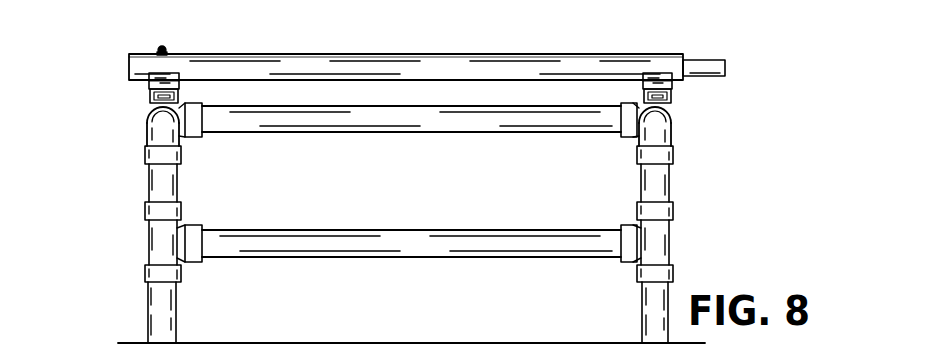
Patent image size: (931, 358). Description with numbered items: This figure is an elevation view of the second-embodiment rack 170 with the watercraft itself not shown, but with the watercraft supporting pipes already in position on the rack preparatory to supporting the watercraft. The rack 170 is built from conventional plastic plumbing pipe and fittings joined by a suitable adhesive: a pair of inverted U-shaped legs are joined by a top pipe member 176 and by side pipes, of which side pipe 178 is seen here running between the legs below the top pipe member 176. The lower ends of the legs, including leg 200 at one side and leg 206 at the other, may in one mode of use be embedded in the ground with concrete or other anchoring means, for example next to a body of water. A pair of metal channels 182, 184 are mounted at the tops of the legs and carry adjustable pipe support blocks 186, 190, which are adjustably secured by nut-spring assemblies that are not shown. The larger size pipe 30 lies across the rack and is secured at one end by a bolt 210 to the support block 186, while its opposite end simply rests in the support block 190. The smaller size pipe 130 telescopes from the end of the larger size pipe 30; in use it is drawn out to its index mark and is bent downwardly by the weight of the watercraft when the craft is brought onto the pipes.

The larger size pipe 30 is at (305, 64).
The smaller size pipe 130 is at (714, 68).
The rack 170 is at (686, 262).
The top pipe member 176 is at (336, 122).
The side pipe 178 is at (420, 242).
The metal channel 182 is at (150, 101).
The metal channel 184 is at (673, 100).
The pipe support block 186 is at (181, 82).
The pipe support block 190 is at (643, 86).
The leg 200 is at (168, 305).
The leg 206 is at (648, 322).
The bolt 210 is at (166, 46).